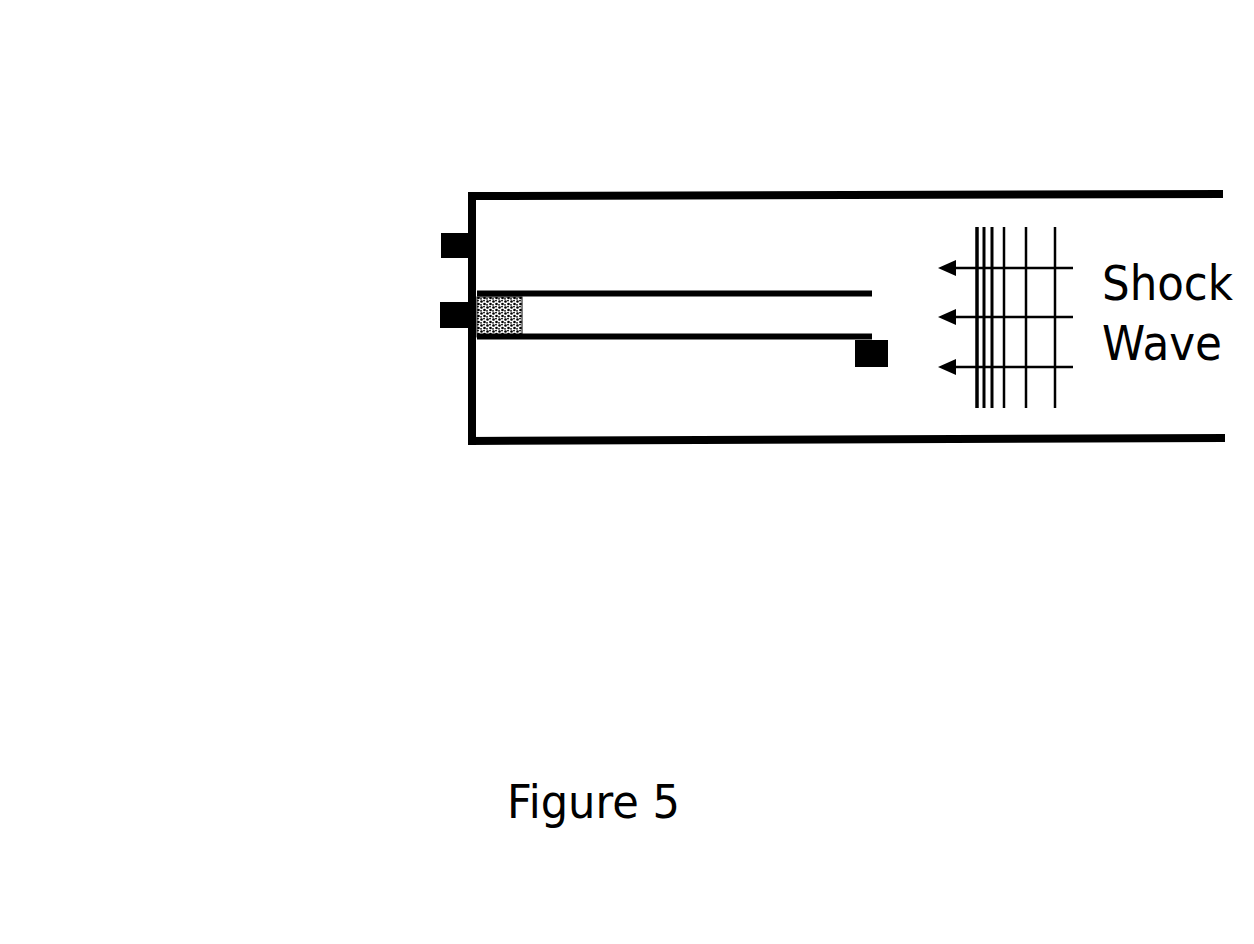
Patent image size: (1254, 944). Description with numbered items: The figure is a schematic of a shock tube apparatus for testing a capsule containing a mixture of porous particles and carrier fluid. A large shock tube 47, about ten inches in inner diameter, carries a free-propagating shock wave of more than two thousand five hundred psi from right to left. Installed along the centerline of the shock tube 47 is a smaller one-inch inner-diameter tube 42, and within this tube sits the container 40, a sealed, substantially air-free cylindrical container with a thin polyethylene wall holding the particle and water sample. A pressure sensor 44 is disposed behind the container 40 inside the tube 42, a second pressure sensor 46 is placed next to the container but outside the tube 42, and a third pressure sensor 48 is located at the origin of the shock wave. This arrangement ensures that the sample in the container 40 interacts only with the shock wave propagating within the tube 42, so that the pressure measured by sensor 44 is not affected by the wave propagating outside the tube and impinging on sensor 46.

The container 40 is at (469, 350).
The tube 42 is at (683, 340).
The pressure sensor 44 is at (440, 312).
The pressure sensor 46 is at (455, 232).
The shock tube 47 is at (678, 192).
The pressure sensor 48 is at (878, 385).